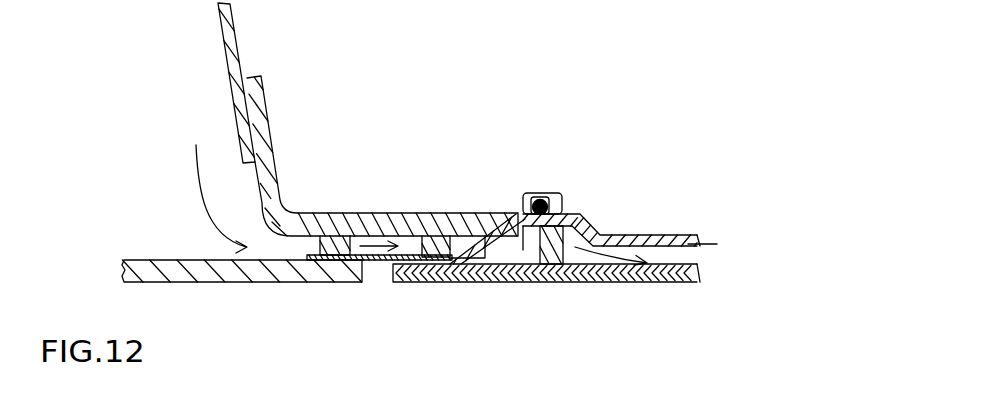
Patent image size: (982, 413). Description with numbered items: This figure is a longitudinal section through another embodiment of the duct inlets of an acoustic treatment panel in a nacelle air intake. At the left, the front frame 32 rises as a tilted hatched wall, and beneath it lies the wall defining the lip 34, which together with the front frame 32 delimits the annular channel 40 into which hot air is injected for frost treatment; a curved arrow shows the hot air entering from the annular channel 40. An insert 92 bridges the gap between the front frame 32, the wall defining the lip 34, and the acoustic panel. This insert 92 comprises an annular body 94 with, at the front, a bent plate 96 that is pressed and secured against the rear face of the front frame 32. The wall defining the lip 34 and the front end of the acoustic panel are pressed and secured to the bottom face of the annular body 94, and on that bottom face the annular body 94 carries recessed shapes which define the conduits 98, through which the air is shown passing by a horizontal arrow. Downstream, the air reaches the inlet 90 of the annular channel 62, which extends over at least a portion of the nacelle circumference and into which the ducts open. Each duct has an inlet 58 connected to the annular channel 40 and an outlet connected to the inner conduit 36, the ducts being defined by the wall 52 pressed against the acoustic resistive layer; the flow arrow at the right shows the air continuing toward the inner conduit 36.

The front frame 32 is at (235, 31).
The lip 34 is at (207, 282).
The inner conduit 36 is at (545, 295).
The annular channel 40 is at (132, 73).
The wall 52 is at (696, 237).
The inlet 58 is at (613, 235).
The annular channel 62 is at (533, 240).
The inlet 90 is at (488, 243).
The insert 92 is at (380, 214).
The annular body 94 is at (438, 234).
The bent plate 96 is at (270, 170).
The conduits 98 is at (392, 256).